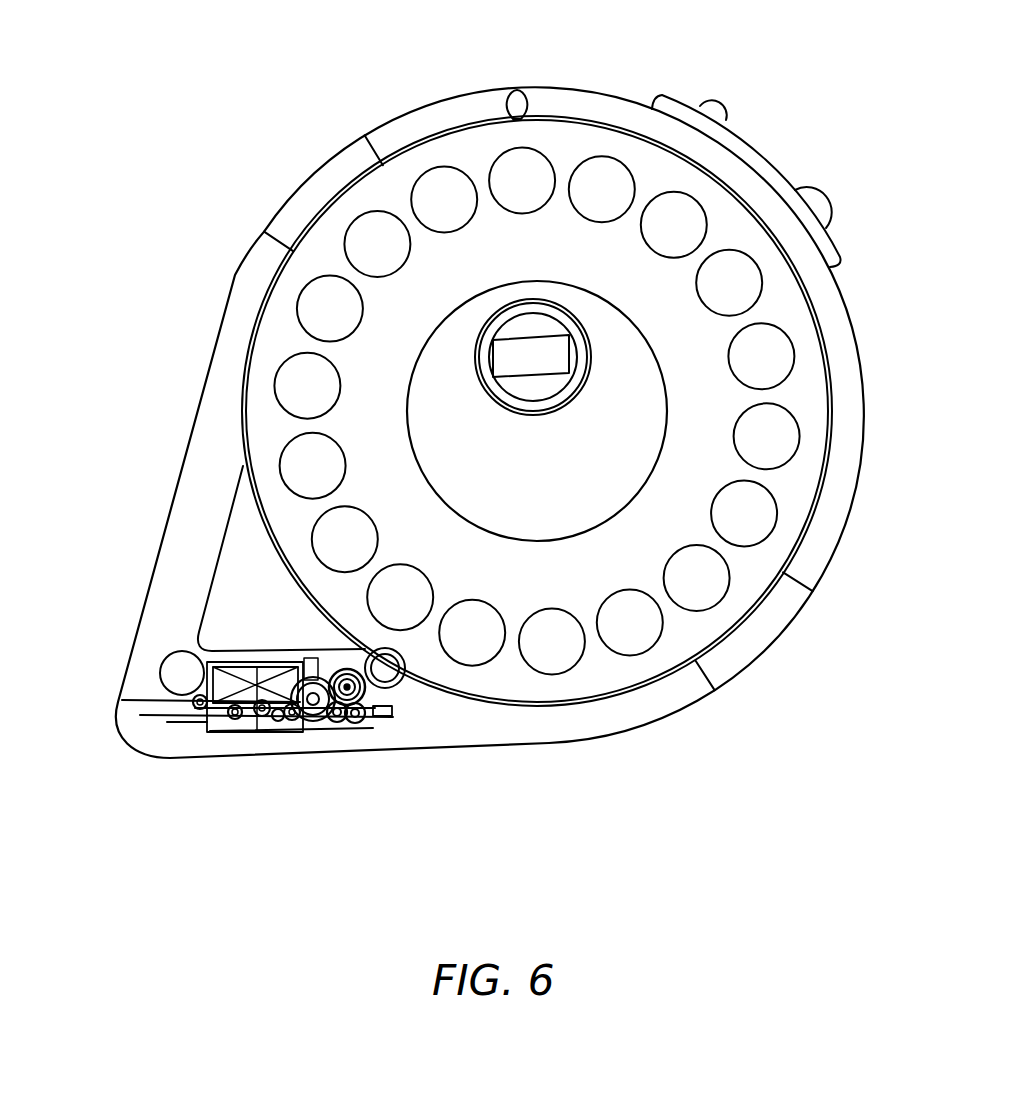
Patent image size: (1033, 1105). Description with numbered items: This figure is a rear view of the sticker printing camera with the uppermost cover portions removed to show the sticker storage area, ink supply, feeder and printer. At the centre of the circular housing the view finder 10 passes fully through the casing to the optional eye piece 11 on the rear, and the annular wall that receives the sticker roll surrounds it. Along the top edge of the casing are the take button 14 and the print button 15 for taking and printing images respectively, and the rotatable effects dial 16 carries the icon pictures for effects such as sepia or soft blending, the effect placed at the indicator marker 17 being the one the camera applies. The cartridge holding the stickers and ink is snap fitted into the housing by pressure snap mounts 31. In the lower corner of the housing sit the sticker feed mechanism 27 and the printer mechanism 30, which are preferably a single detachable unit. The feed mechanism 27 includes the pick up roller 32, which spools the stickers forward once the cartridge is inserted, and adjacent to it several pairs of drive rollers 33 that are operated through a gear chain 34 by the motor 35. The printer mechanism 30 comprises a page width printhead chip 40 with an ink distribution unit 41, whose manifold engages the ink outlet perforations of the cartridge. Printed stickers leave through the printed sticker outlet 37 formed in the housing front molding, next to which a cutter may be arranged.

The view finder 10 is at (554, 367).
The eye piece 11 is at (523, 413).
The take button 14 is at (810, 190).
The print button 15 is at (727, 112).
The effects dial 16 is at (790, 308).
The indicator marker 17 is at (520, 87).
The sticker feed mechanism 27 is at (390, 737).
The printer mechanism 30 is at (320, 738).
The pressure snap mounts 31 is at (743, 648).
The pick up roller 32 is at (395, 672).
The drive rollers 33 is at (337, 670).
The gear chain 34 is at (235, 717).
The motor 35 is at (175, 672).
The printed sticker outlet 37 is at (128, 715).
The page width printhead chip 40 is at (262, 715).
The ink distribution unit 41 is at (245, 668).